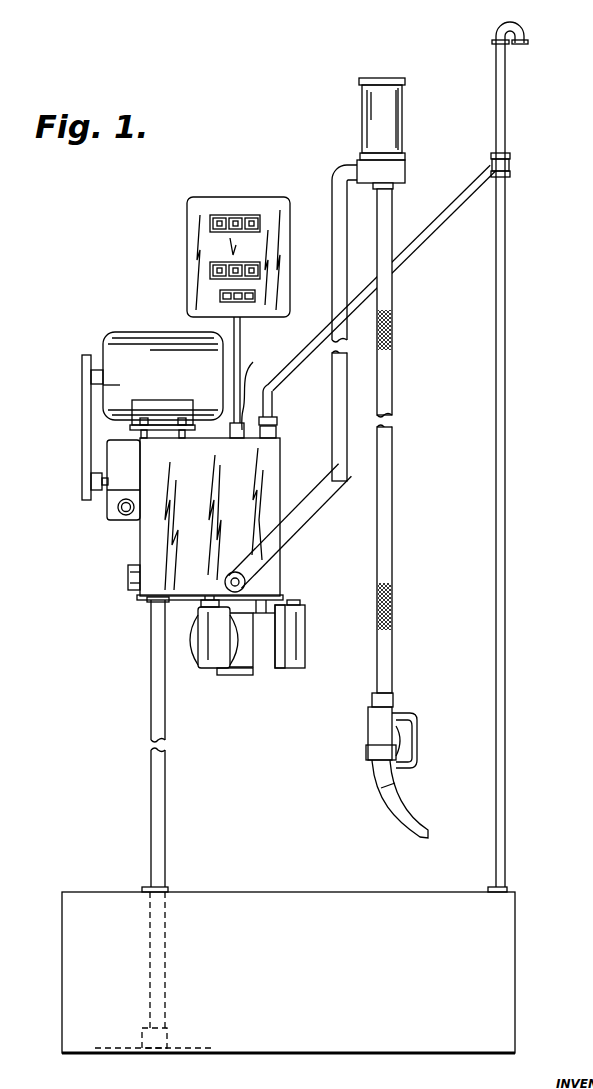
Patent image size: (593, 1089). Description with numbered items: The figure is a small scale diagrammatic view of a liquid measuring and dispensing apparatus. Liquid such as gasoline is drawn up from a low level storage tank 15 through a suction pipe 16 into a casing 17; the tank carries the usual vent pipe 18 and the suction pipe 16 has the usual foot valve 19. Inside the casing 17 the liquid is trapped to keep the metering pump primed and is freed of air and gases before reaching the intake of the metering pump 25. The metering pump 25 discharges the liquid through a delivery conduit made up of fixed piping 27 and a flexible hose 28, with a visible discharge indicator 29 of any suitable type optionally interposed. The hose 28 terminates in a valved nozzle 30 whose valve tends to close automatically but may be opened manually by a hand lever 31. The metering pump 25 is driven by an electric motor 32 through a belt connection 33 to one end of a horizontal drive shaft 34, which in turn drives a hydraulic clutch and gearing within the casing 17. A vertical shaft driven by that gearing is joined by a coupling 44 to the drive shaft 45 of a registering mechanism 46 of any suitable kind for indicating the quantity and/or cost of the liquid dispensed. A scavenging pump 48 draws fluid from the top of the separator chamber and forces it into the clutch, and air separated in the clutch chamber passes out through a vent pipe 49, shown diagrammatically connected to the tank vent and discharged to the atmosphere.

The storage tank 15 is at (288, 972).
The suction pipe 16 is at (158, 786).
The casing 17 is at (148, 546).
The vent pipe 18 is at (503, 657).
The foot valve 19 is at (157, 1042).
The metering pump 25 is at (265, 658).
The fixed piping 27 is at (336, 418).
The flexible hose 28 is at (383, 393).
The visible discharge indicator 29 is at (402, 113).
The valved nozzle 30 is at (390, 778).
The hand lever 31 is at (405, 732).
The electric motor 32 is at (163, 385).
The belt connection 33 is at (82, 410).
The horizontal drive shaft 34 is at (102, 490).
The coupling 44 is at (262, 392).
The drive shaft 45 is at (241, 336).
The registering mechanism 46 is at (190, 247).
The scavenging pump 48 is at (104, 450).
The vent pipe 49 is at (281, 374).